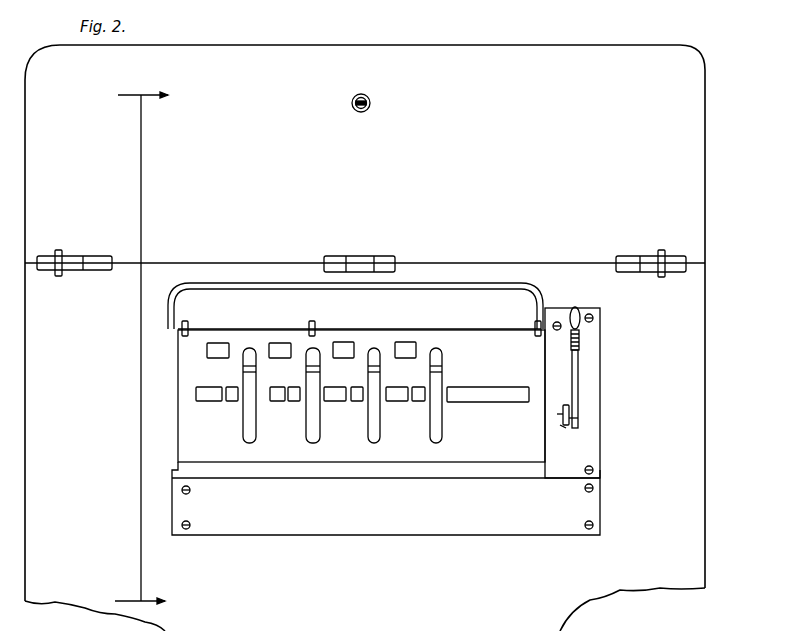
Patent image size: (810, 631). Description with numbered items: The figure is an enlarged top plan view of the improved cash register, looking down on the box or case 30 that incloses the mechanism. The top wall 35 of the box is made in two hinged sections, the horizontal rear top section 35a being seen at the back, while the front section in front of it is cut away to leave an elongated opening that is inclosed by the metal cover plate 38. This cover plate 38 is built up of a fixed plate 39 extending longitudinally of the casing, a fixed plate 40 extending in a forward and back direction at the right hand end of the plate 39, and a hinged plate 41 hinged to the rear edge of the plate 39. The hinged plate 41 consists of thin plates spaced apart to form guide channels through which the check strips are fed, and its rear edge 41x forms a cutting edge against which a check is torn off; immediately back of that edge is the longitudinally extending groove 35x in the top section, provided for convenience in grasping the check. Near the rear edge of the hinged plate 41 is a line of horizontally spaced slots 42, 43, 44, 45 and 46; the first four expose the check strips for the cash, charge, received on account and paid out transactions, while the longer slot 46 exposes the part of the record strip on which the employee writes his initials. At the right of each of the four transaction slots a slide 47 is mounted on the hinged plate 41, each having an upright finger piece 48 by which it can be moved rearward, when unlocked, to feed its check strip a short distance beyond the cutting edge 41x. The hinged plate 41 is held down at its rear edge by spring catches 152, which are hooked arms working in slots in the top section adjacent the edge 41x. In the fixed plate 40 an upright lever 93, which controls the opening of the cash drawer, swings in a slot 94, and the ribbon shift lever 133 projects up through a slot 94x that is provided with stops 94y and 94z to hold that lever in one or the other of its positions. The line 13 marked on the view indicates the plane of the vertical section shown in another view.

The section line 13 is at (131, 349).
The box or case 30 is at (276, 41).
The top wall 35 is at (690, 369).
The rear top section 35a is at (457, 61).
The longitudinally extending groove 35x is at (406, 298).
The cover plate 38 is at (520, 448).
The fixed plate 39 is at (596, 508).
The fixed plate 40 is at (548, 463).
The hinged plate 41 is at (178, 432).
The rear edge 41x is at (333, 328).
The slot 42 is at (232, 402).
The slot 43 is at (294, 402).
The slot 44 is at (357, 402).
The slot 45 is at (418, 402).
The slot 46 is at (468, 396).
The slide 47 is at (306, 438).
The finger piece 48 is at (306, 369).
The upright lever 93 is at (580, 336).
The slot 94 is at (578, 368).
The slot 94x is at (563, 414).
The stop 94y is at (580, 418).
The stop 94z is at (569, 410).
The ribbon shift lever 133 is at (560, 425).
The spring catch 152 is at (185, 322).